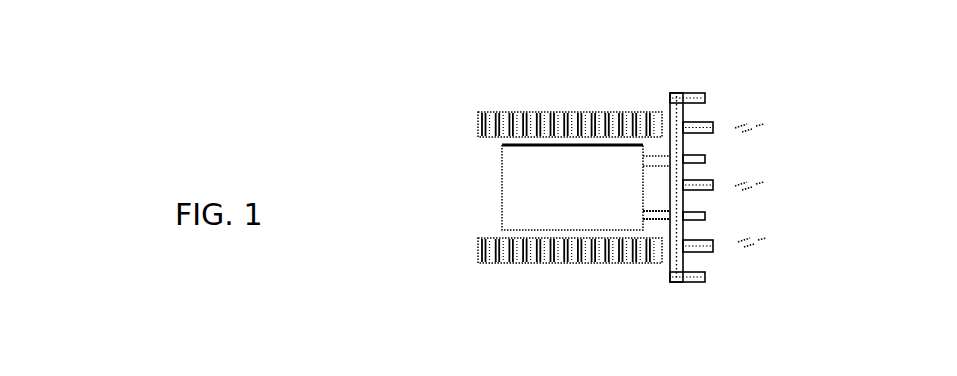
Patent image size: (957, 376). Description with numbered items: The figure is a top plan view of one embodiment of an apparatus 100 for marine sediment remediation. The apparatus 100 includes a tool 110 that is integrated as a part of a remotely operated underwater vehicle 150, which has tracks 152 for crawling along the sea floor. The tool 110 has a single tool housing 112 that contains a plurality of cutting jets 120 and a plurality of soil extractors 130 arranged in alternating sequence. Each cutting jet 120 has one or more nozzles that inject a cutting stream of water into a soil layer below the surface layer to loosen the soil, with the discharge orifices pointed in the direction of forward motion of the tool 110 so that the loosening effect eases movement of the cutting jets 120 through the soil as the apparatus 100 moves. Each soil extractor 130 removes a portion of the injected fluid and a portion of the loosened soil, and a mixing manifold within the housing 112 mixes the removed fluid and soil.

The apparatus 100 is at (760, 91).
The tool 110 is at (700, 84).
The tool housing 112 is at (673, 100).
The cutting jet 120 is at (705, 277).
The soil extractor 130 is at (707, 135).
The remotely operated underwater vehicle 150 is at (575, 107).
The tracks 152 is at (523, 256).